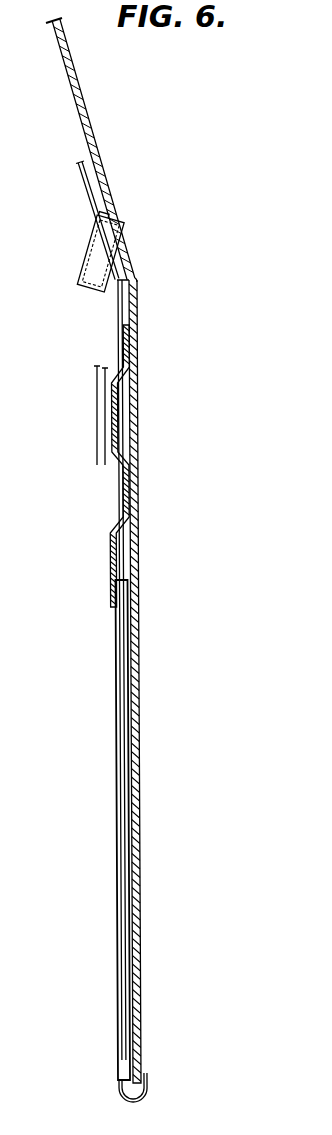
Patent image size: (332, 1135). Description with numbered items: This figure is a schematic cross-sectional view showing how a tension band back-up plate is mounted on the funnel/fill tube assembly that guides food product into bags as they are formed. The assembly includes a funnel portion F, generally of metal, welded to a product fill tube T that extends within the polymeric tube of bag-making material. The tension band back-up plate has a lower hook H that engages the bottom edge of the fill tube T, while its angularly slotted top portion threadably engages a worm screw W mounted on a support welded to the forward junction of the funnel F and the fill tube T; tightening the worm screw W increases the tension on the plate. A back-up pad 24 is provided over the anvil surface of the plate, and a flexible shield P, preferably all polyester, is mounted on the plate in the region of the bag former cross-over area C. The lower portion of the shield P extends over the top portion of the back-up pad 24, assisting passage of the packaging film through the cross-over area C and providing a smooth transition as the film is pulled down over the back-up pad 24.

The funnel portion F is at (86, 110).
The worm screw W is at (82, 260).
The product fill tube T is at (138, 317).
The flexible shield P is at (113, 405).
The bag former cross-over area C is at (105, 452).
The back-up pad 24 is at (116, 1003).
The lower hook H is at (148, 1090).